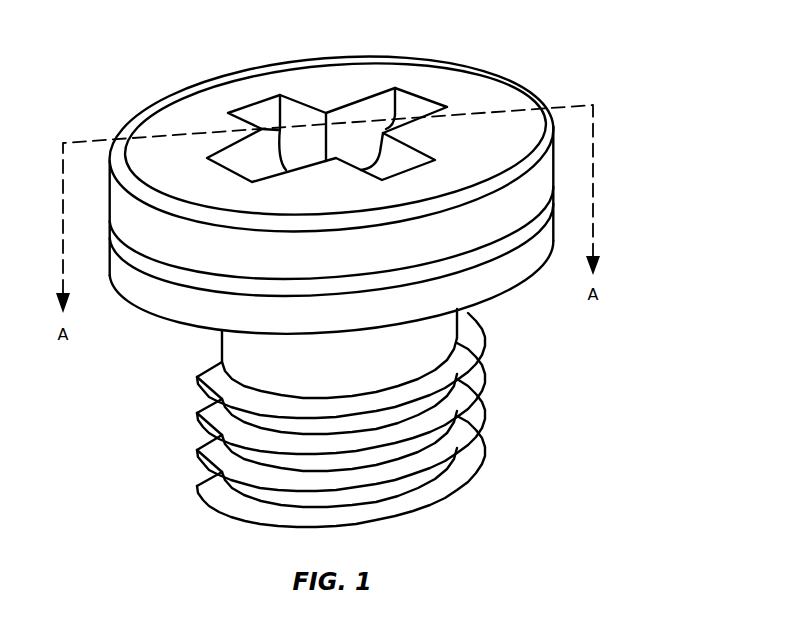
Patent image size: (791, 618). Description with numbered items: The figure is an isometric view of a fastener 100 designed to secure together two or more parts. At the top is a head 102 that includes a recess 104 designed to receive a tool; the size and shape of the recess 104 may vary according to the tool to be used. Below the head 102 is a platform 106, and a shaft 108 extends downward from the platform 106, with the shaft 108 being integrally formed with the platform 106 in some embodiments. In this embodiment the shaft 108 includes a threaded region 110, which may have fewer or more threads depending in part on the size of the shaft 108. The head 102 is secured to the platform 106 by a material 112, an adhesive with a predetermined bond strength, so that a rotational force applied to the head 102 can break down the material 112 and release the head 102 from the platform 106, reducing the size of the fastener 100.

The fastener 100 is at (380, 263).
The head 102 is at (355, 189).
The recess 104 is at (232, 98).
The platform 106 is at (520, 265).
The shaft 108 is at (240, 346).
The threaded region 110 is at (522, 434).
The material 112 is at (477, 257).